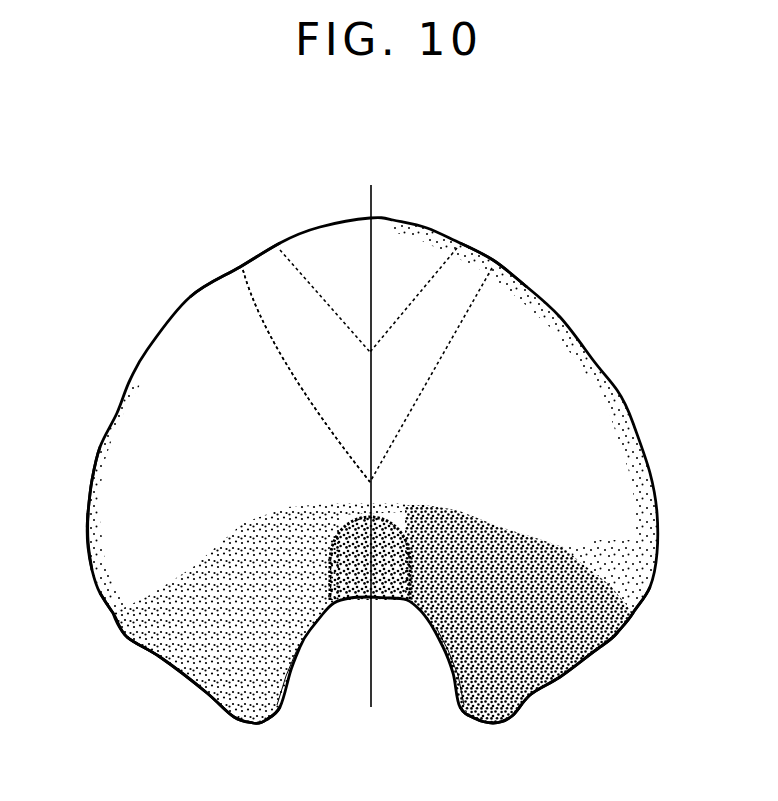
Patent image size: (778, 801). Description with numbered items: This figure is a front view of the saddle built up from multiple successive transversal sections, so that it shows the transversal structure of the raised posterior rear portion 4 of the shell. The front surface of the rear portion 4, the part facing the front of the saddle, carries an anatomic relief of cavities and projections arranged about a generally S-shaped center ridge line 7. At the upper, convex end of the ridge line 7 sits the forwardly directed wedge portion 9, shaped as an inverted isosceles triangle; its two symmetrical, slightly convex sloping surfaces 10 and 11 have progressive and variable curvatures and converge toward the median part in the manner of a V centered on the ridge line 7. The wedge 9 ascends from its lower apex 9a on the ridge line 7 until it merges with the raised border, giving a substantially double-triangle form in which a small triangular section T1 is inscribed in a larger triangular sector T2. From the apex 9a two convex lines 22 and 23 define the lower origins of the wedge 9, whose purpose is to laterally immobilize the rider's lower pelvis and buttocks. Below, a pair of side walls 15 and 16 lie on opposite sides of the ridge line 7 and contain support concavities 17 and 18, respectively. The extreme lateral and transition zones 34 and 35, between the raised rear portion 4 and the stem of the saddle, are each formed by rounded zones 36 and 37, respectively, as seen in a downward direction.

The raised posterior rear portion 4 is at (490, 234).
The center ridge line 7 is at (370, 218).
The wedge portion 9 is at (417, 242).
The apex 9a is at (372, 480).
The sloping surface 10 is at (482, 277).
The sloping surface 11 is at (247, 275).
The side wall 15 is at (457, 507).
The side wall 16 is at (255, 507).
The concavity 17 is at (545, 543).
The concavity 18 is at (168, 535).
The convex line 22 is at (447, 363).
The convex line 23 is at (293, 368).
The extreme lateral and transition zone 34 is at (612, 638).
The extreme lateral and transition zone 35 is at (175, 640).
The rounded zone 36 is at (180, 593).
The rounded zone 37 is at (205, 658).
The small triangular section T1 is at (325, 237).
The larger triangular sector T2 is at (278, 260).